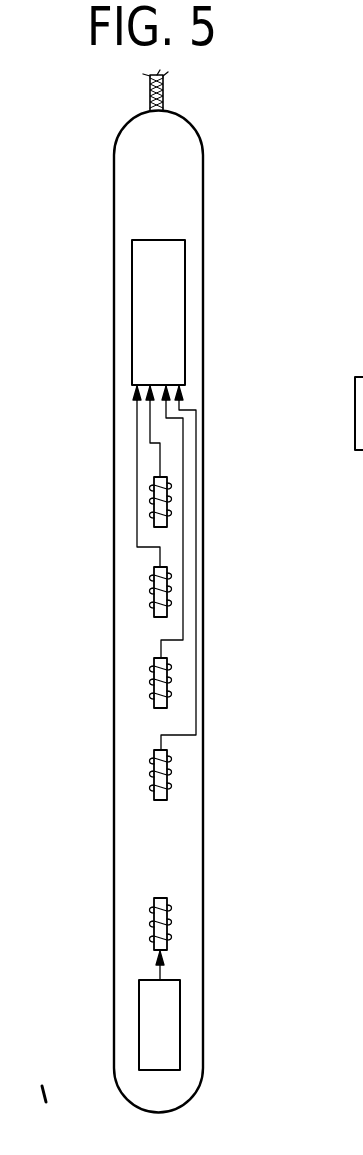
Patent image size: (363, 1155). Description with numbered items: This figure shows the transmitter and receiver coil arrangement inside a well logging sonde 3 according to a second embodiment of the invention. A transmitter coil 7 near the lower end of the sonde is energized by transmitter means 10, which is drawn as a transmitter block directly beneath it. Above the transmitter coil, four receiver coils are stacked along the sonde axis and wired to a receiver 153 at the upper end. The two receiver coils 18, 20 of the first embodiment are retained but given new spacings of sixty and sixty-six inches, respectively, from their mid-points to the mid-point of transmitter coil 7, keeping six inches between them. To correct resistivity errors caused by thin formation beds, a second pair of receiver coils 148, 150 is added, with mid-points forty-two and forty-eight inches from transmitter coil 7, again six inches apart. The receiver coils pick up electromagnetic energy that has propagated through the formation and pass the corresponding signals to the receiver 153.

The well logging sonde 3 is at (208, 228).
The receiver 153 is at (132, 275).
The receiver coil 20 is at (160, 497).
The receiver coil 18 is at (160, 575).
The receiver coil 150 is at (163, 677).
The receiver coil 148 is at (163, 767).
The transmitter coil 7 is at (165, 920).
The transmitter means 10 is at (173, 1017).